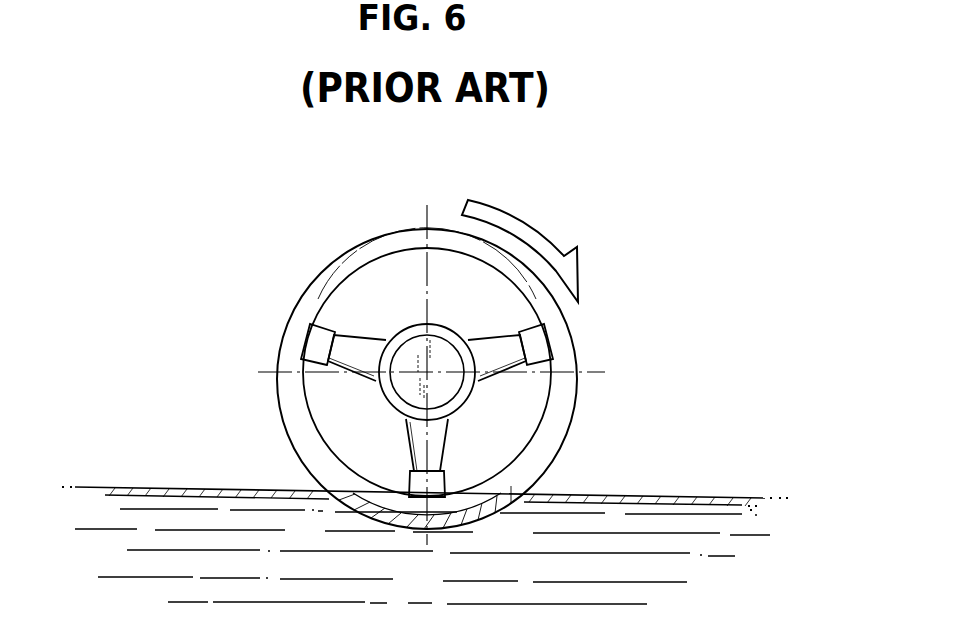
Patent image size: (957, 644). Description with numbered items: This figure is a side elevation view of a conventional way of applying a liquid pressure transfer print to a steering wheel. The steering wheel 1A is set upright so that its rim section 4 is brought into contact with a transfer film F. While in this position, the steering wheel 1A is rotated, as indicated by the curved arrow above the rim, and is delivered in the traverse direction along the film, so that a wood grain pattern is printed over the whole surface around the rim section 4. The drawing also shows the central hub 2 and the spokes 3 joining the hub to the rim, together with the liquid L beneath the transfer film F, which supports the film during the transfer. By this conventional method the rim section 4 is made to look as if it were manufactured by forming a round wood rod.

The steering wheel 1A is at (313, 292).
The hub 2 is at (435, 345).
The spoke 3 is at (433, 443).
The rim section 4 is at (397, 237).
The transfer film F is at (580, 498).
The liquid L is at (422, 557).